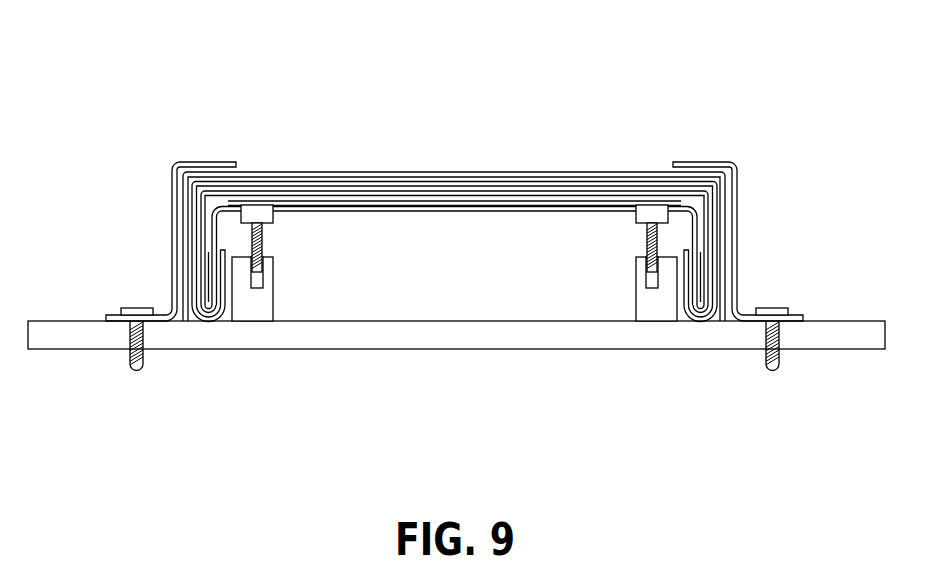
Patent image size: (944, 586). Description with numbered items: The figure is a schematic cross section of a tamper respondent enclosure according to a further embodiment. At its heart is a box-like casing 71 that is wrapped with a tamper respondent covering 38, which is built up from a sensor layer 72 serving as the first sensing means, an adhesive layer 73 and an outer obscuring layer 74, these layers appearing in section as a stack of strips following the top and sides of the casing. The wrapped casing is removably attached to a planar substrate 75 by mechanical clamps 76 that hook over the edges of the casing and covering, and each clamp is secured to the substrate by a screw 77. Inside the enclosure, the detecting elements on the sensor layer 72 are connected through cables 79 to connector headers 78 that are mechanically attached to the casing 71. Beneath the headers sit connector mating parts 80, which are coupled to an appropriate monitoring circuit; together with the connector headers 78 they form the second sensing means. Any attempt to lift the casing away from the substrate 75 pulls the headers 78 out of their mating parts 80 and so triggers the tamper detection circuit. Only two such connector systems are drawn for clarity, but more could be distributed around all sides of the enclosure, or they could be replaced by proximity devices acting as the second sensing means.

The tamper respondent covering 38 is at (425, 173).
The box-like casing 71 is at (618, 172).
The sensor layer 72 is at (523, 172).
The adhesive layer 73 is at (257, 173).
The obscuring layer 74 is at (322, 173).
The planar substrate 75 is at (223, 337).
The mechanical clamps 76 is at (174, 160).
The screws 77 is at (130, 308).
The connector headers 78 is at (273, 216).
The cables 79 is at (218, 228).
The connector mating parts 80 is at (267, 303).